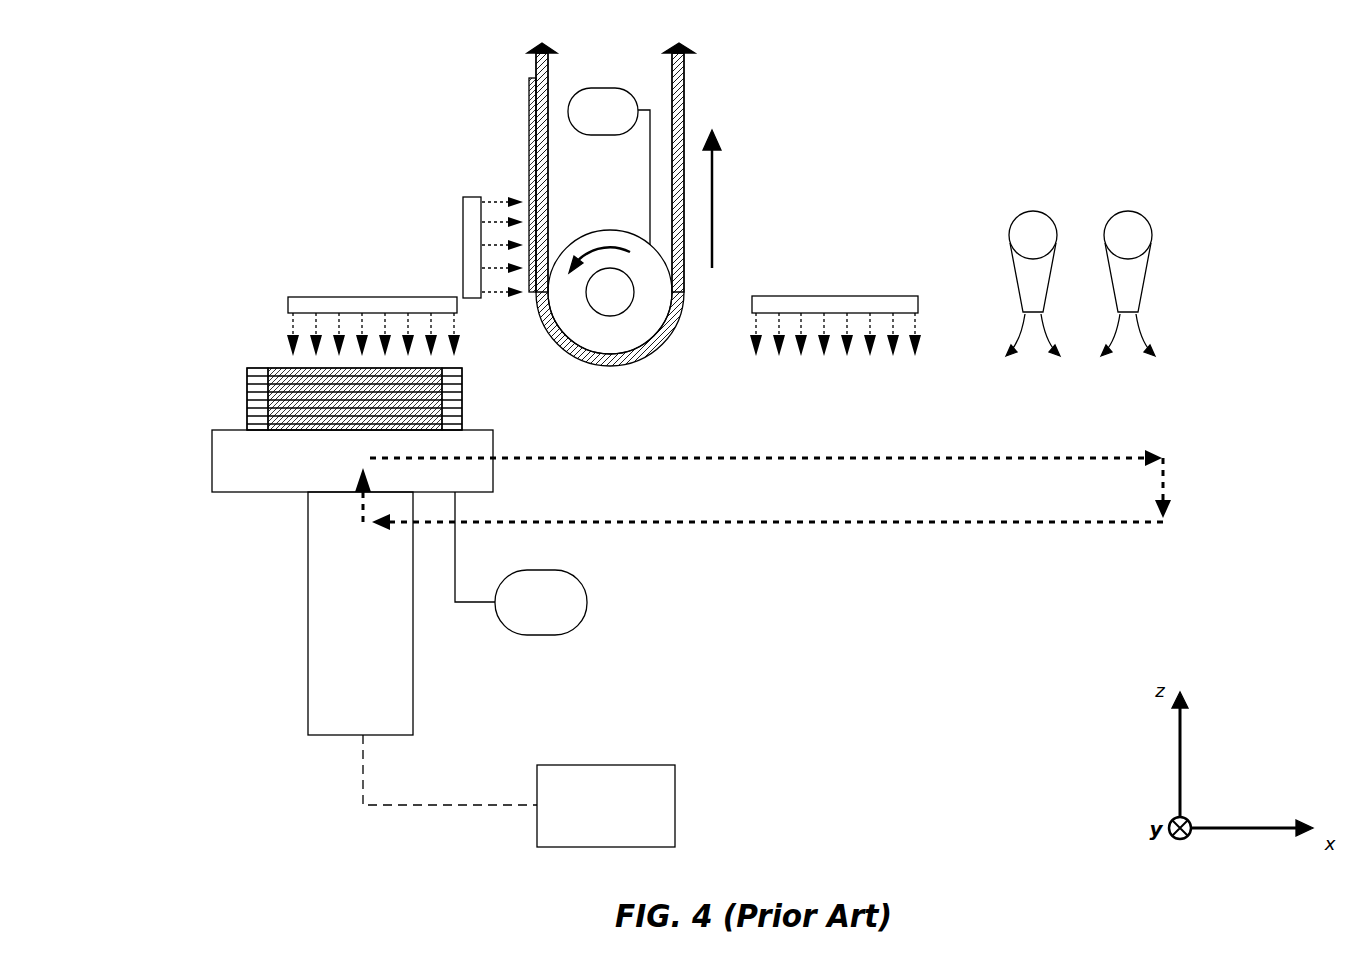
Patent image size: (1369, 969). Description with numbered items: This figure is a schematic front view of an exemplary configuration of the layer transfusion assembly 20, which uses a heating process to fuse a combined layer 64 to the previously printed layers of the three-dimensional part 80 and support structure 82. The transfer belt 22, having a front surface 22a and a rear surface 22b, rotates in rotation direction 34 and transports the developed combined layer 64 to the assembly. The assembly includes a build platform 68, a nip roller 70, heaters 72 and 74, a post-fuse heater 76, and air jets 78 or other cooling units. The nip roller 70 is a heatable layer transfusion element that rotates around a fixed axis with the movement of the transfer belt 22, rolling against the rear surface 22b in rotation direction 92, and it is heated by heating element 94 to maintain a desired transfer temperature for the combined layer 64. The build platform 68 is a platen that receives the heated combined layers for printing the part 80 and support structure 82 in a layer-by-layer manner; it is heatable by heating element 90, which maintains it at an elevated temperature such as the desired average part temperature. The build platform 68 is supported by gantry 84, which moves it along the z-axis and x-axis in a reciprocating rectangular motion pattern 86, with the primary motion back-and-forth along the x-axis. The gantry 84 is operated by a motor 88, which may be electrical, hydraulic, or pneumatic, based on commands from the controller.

The layer transfusion assembly 20 is at (1235, 550).
The transfer belt 22 is at (606, 192).
The front surface 22a is at (684, 103).
The rear surface 22b is at (550, 78).
The rotation direction 34 is at (712, 178).
The combined layer 64 is at (514, 153).
The build platform 68 is at (212, 465).
The nip roller 70 is at (563, 243).
The heater 72 is at (450, 205).
The heater 74 is at (325, 290).
The post-fuse heater 76 is at (826, 287).
The air jets 78 is at (1128, 211).
The 3D part 80 is at (282, 368).
The support structure 82 is at (247, 392).
The gantry 84 is at (413, 668).
The reciprocating rectangular motion pattern 86 is at (878, 524).
The motor 88 is at (675, 793).
The heating element 90 is at (588, 587).
The rotation direction 92 is at (630, 250).
The heating element 94 is at (588, 88).